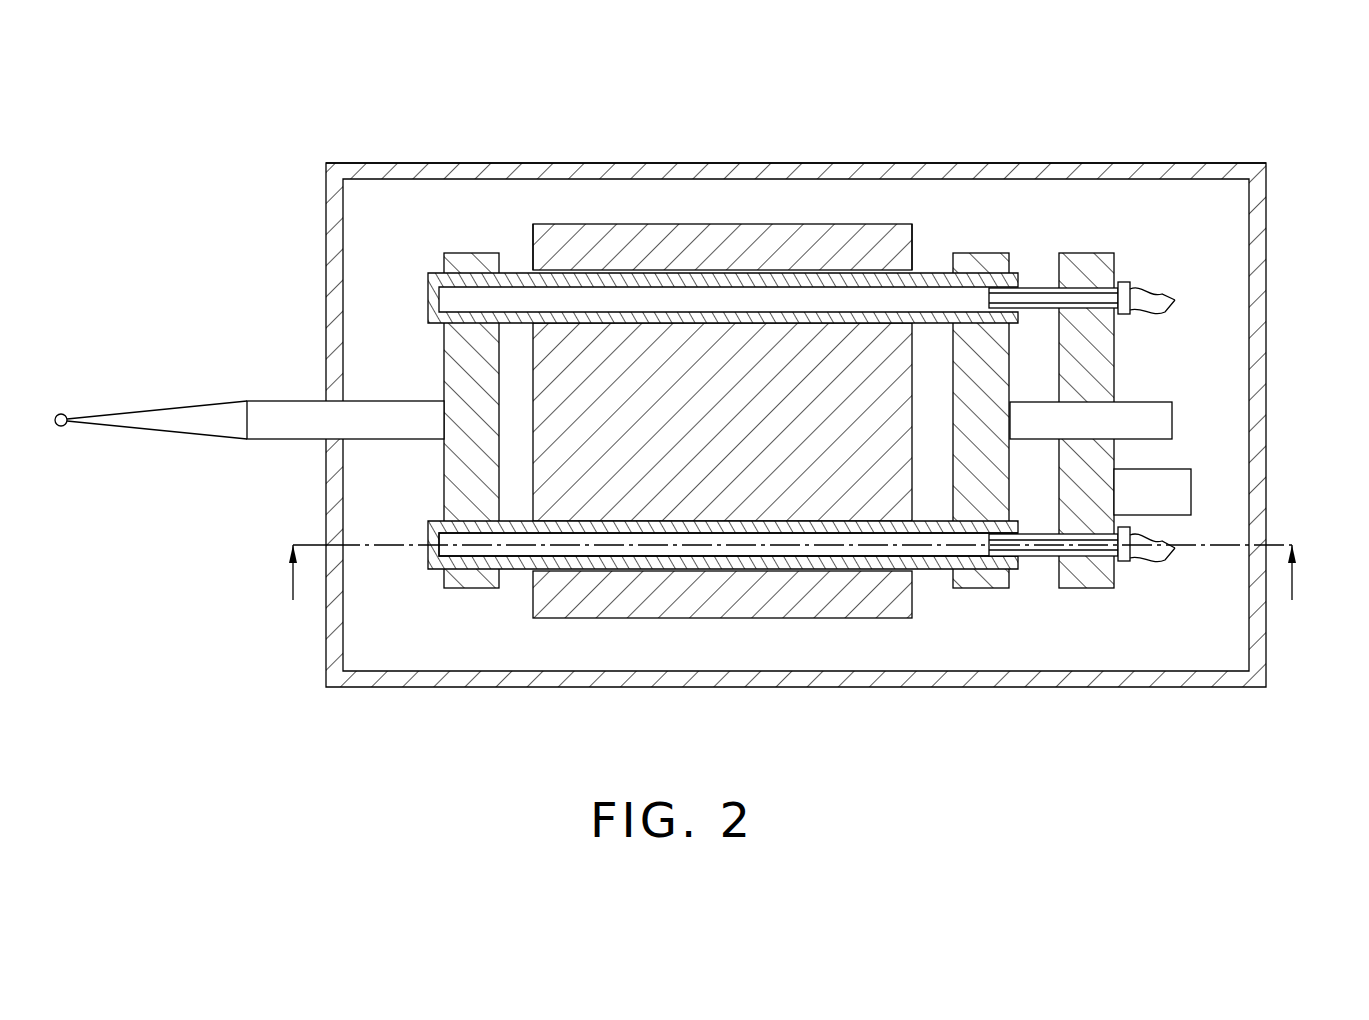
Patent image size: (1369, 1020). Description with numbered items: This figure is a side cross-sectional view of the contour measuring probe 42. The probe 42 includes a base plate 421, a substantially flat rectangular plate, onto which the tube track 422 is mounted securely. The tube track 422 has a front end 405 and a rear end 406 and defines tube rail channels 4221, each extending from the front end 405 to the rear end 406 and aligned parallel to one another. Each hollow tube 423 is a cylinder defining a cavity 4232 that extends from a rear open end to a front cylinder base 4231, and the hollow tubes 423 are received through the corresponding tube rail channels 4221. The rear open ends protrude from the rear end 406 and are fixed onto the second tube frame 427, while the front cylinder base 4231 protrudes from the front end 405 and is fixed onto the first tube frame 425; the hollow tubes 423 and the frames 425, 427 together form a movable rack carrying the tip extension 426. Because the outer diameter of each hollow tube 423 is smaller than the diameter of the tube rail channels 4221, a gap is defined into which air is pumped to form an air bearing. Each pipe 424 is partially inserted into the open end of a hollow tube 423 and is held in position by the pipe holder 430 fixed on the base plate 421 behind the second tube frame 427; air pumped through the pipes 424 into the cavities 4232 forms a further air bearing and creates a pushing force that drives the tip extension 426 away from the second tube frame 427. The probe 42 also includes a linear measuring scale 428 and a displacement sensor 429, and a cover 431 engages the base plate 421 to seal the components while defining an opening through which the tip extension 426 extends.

The contour measuring probe 42 is at (906, 112).
The base plate 421 is at (397, 205).
The cover 431 is at (1110, 165).
The front end 405 is at (533, 240).
The rear end 406 is at (913, 240).
The tube track 422 is at (682, 247).
The tube rail channel 4221 is at (823, 270).
The hollow tube 423 is at (717, 563).
The front cylinder base 4231 is at (428, 562).
The cavity 4232 is at (577, 550).
The pipe 424 is at (1037, 552).
The first tube frame 425 is at (474, 582).
The tip extension 426 is at (390, 418).
The second tube frame 427 is at (972, 578).
The linear measuring scale 428 is at (1147, 418).
The displacement sensor 429 is at (1173, 495).
The pipe holder 430 is at (1092, 580).